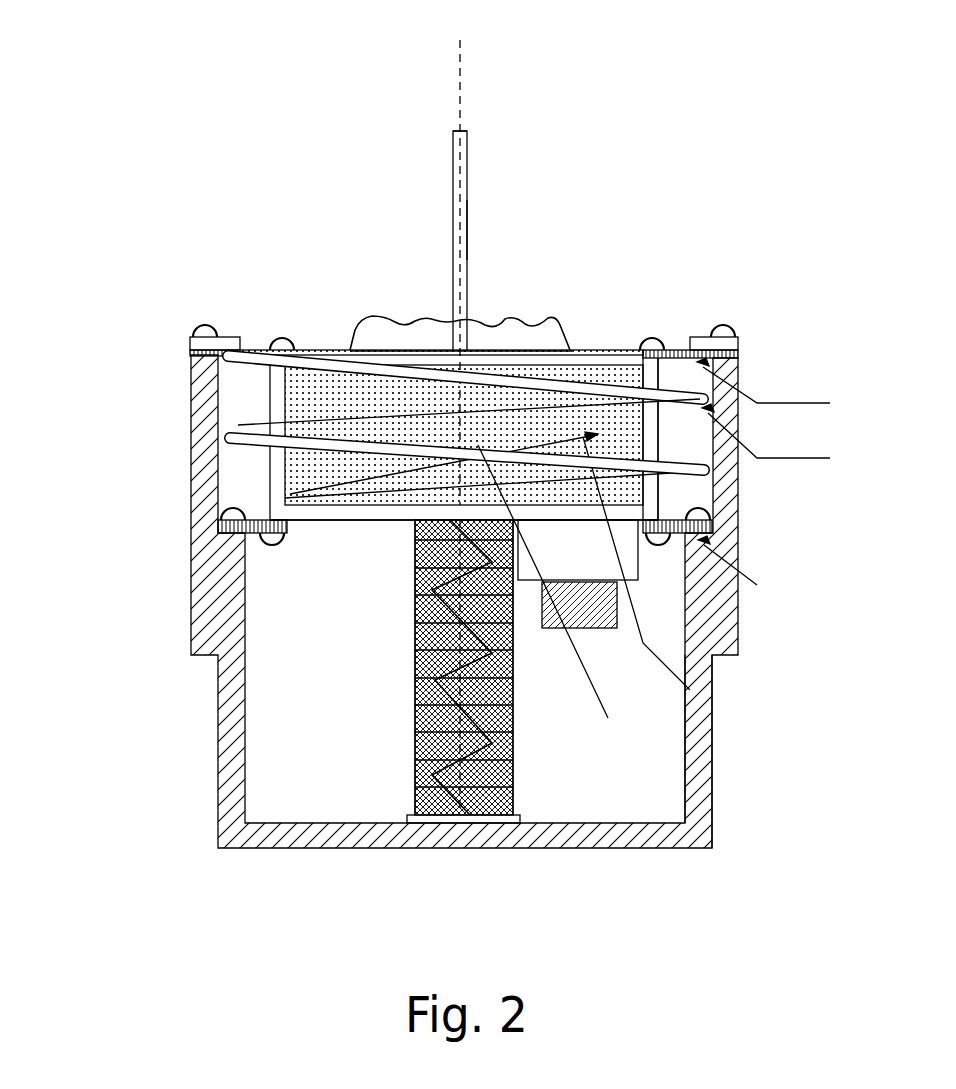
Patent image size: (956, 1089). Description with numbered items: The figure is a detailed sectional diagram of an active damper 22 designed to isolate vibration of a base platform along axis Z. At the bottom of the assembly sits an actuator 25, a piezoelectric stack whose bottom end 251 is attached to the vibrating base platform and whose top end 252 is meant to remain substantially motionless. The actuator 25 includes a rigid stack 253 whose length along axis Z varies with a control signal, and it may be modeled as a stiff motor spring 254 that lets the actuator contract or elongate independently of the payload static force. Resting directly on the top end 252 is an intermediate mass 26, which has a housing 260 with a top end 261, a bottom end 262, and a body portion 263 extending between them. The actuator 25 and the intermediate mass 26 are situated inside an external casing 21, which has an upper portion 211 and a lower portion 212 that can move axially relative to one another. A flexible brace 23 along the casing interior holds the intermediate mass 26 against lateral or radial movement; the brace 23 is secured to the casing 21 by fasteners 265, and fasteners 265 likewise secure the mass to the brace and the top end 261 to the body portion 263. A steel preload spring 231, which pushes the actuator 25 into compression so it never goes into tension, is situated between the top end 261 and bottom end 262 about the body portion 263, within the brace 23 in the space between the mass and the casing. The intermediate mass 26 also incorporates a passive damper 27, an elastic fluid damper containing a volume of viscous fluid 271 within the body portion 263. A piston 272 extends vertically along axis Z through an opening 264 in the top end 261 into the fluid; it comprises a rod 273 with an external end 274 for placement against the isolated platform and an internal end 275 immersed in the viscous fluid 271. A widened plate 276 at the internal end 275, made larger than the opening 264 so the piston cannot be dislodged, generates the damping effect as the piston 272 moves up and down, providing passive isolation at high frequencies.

The active damper 22 is at (720, 96).
The external casing 21 is at (218, 748).
The upper portion 211 is at (193, 372).
The lower portion 212 is at (715, 803).
The brace 23 is at (703, 338).
The spring 231 is at (250, 440).
The actuator 25 is at (513, 760).
The bottom end 251 is at (513, 813).
The top end 252 is at (305, 715).
The stack 253 is at (413, 680).
The motor spring 254 is at (517, 680).
The intermediate mass 26 is at (262, 412).
The housing 260 is at (268, 470).
The top end 261 is at (355, 275).
The bottom end 262 is at (393, 625).
The body portion 263 is at (657, 430).
The opening 264 is at (386, 262).
The fasteners 265 is at (434, 479).
The passive damper 27 is at (500, 296).
The viscous fluid 271 is at (464, 435).
The piston 272 is at (476, 229).
The rod 273 is at (470, 178).
The external end 274 is at (468, 128).
The internal end 275 is at (513, 677).
The plate 276 is at (563, 318).